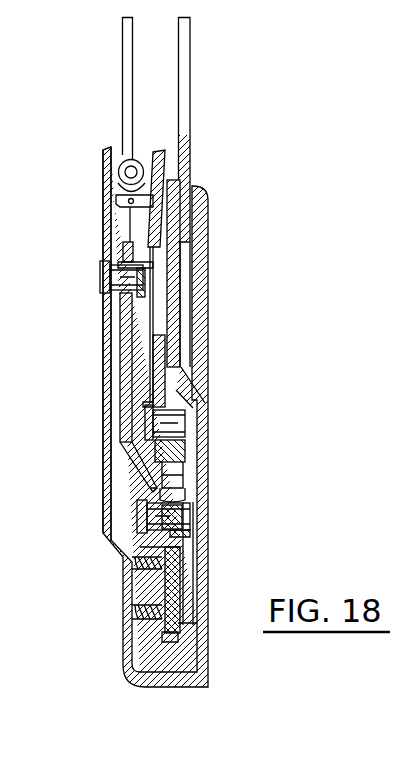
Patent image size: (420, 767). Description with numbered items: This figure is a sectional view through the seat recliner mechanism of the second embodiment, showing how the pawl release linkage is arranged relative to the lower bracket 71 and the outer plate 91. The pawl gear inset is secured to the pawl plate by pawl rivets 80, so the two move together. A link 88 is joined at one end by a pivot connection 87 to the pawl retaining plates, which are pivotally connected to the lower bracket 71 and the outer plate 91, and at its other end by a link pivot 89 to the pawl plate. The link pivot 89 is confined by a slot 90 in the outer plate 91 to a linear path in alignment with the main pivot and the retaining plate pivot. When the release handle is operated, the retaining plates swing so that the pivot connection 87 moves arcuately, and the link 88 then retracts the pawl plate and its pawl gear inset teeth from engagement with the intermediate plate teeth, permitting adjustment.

The lower bracket 71 is at (205, 472).
The pawl rivets 80 is at (184, 412).
The pivot connection 87 is at (192, 513).
The link 88 is at (122, 436).
The link pivot 89 is at (102, 280).
The slot 90 is at (104, 312).
The outer plate 91 is at (103, 362).